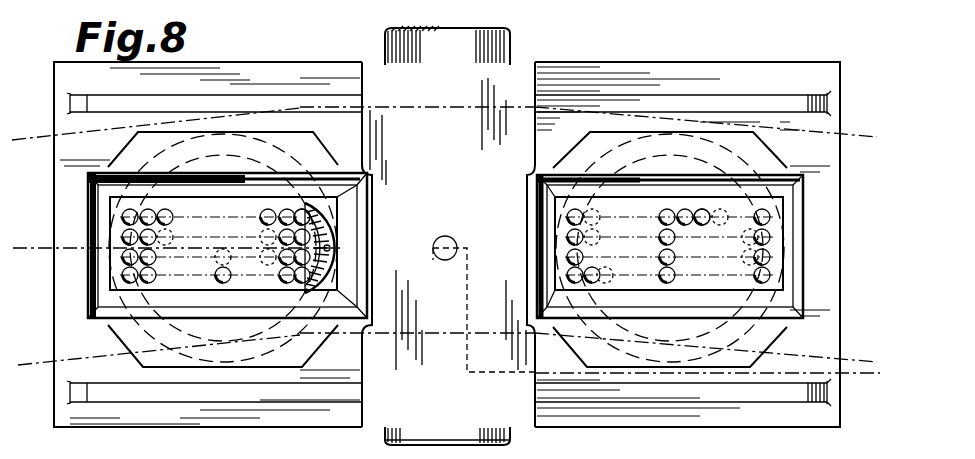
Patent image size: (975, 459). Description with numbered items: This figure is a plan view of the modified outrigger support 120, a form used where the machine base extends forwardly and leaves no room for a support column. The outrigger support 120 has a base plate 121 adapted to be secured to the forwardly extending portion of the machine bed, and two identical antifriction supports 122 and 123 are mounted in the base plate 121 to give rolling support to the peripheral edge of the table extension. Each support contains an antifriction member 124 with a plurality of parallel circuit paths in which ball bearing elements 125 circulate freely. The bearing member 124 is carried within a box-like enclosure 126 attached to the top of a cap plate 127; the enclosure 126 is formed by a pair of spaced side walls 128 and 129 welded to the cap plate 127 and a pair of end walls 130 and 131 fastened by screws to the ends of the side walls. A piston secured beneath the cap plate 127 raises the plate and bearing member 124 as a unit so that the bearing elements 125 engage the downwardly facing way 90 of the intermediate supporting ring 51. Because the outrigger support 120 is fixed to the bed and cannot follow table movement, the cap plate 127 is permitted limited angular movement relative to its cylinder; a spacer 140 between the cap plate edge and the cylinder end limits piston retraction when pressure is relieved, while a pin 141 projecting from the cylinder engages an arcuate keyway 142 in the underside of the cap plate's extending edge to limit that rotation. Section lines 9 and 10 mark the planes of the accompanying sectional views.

The section line 9 is at (22, 250).
The section line 10 is at (230, 450).
The intermediate supporting ring 51 is at (559, 449).
The way 90 is at (423, 103).
The outrigger support 120 is at (176, 405).
The base plate 121 is at (62, 427).
The antifriction support 122 is at (292, 360).
The antifriction support 123 is at (630, 360).
The antifriction member 124 is at (240, 241).
The ball bearing elements 125 is at (287, 208).
The box-like enclosure 126 is at (375, 290).
The cap plate 127 is at (775, 162).
The side wall 128 is at (250, 300).
The side wall 129 is at (298, 205).
The end wall 130 is at (105, 266).
The end wall 131 is at (343, 292).
The spacer 140 is at (322, 270).
The pin 141 is at (330, 248).
The arcuate keyway 142 is at (342, 233).